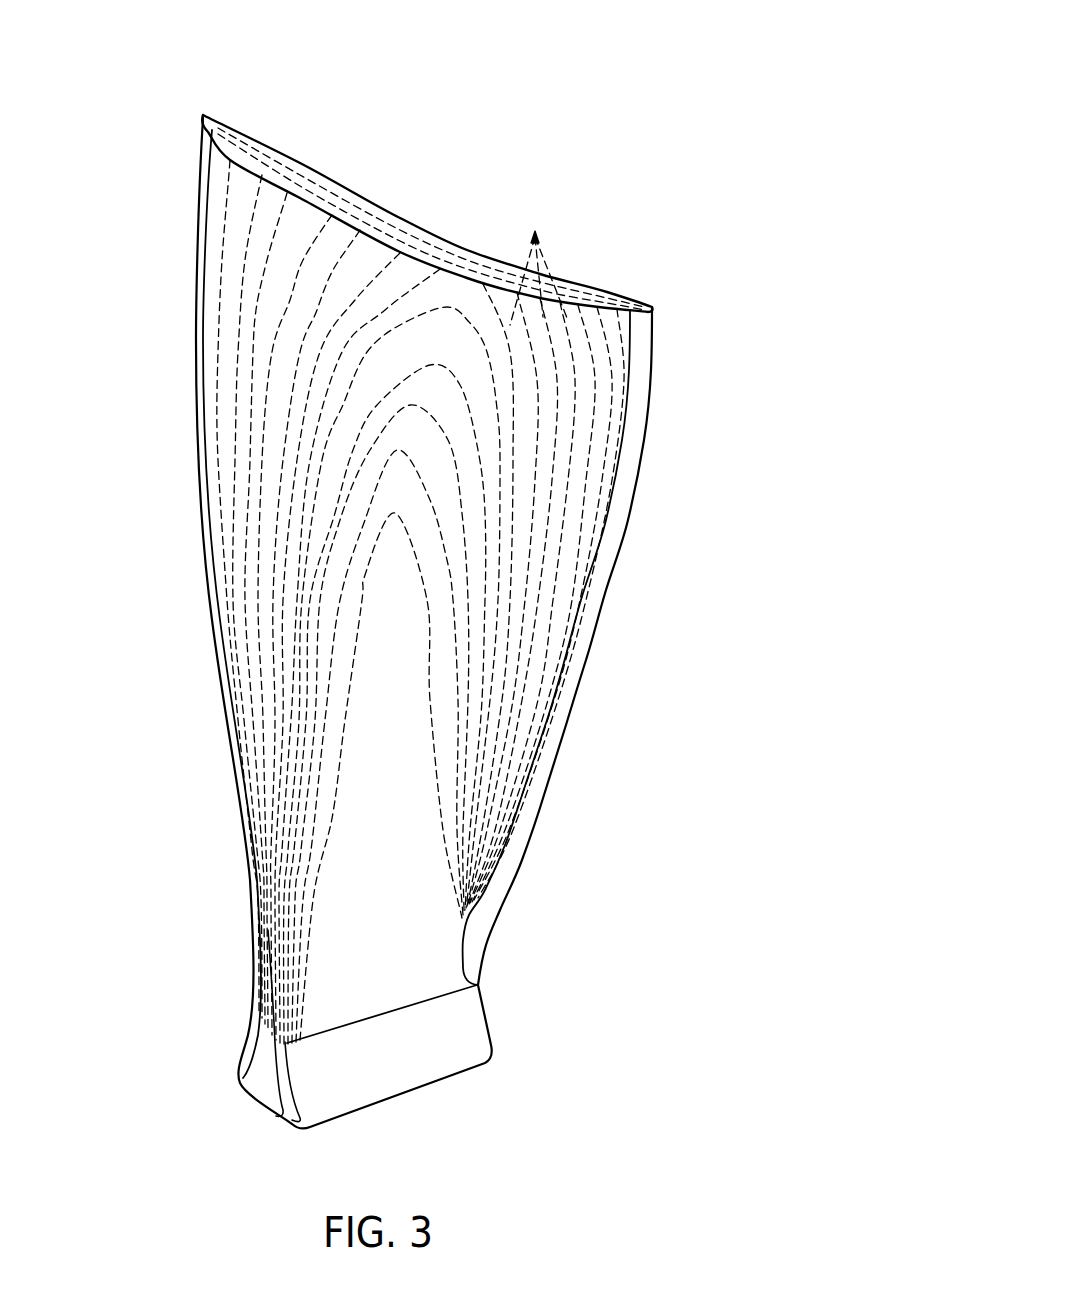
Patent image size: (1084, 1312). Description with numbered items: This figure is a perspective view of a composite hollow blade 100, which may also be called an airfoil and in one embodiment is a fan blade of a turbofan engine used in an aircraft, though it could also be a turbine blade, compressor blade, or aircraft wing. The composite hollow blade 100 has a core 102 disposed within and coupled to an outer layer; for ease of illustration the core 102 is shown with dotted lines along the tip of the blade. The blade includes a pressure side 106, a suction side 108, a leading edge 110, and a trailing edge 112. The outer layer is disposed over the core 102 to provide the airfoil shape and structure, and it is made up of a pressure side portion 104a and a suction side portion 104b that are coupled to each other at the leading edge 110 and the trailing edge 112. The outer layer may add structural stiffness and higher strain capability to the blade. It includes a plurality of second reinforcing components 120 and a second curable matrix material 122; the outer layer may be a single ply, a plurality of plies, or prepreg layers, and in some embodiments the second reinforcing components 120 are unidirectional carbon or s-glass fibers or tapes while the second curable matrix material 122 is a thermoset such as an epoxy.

The composite hollow blade 100 is at (678, 58).
The core 102 is at (207, 117).
The pressure side portion 104a is at (298, 175).
The suction side portion 104b is at (257, 132).
The pressure side 106 is at (416, 222).
The suction side 108 is at (468, 792).
The leading edge 110 is at (197, 425).
The trailing edge 112 is at (653, 318).
The second reinforcing components 120 is at (327, 855).
The second curable matrix material 122 is at (447, 677).